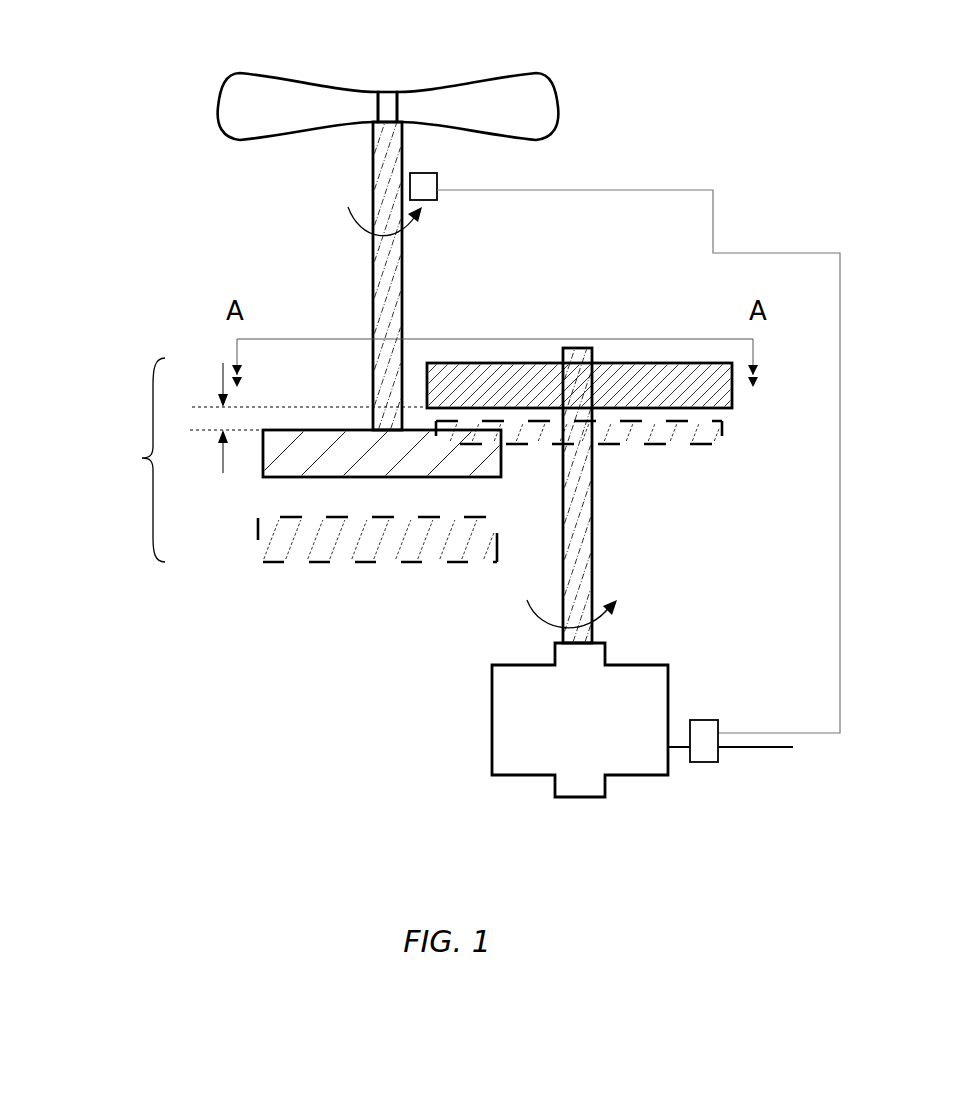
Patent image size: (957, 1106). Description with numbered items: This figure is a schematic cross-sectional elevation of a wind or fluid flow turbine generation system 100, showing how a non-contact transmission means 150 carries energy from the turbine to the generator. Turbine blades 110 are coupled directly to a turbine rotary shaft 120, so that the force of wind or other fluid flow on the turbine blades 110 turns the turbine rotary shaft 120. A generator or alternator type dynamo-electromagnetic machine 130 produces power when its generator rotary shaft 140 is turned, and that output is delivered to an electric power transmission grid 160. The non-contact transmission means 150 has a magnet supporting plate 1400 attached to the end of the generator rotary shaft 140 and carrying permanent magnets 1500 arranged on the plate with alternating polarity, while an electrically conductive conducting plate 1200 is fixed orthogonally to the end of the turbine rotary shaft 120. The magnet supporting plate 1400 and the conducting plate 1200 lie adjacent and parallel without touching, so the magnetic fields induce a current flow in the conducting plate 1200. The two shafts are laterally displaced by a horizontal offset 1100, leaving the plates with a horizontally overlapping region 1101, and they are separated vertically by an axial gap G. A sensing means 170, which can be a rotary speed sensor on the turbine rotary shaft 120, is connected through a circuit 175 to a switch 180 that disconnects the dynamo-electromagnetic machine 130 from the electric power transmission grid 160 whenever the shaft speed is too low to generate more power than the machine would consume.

The turbine generation system 100 is at (181, 131).
The turbine blades 110 is at (573, 100).
The turbine rotary shaft 120 is at (353, 285).
The dynamo-electromagnetic machine 130 is at (580, 720).
The generator rotary shaft 140 is at (573, 523).
The non-contact transmission means 150 is at (116, 460).
The electric power transmission grid 160 is at (745, 748).
The sensing means 170 is at (440, 177).
The circuit 175 is at (803, 248).
The switch 180 is at (708, 732).
The horizontal offset 1100 is at (577, 300).
The horizontally overlapping region 1101 is at (427, 408).
The conducting plate 1200 is at (282, 467).
The magnet supporting plate 1400 is at (732, 395).
The magnets 1500 is at (727, 515).
The axial gap G is at (222, 417).